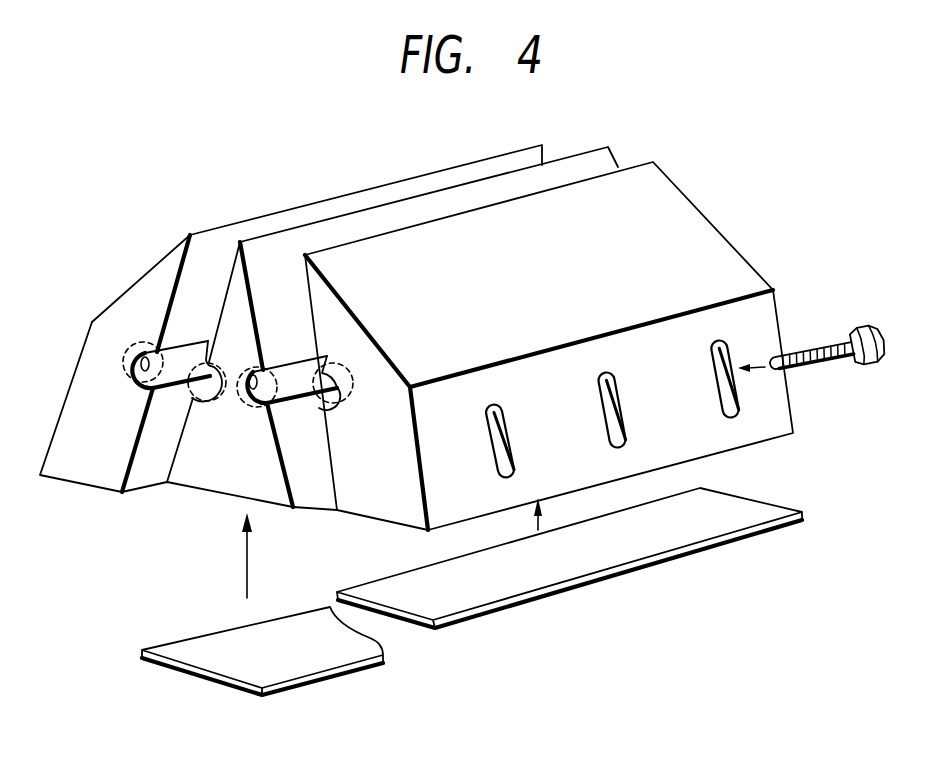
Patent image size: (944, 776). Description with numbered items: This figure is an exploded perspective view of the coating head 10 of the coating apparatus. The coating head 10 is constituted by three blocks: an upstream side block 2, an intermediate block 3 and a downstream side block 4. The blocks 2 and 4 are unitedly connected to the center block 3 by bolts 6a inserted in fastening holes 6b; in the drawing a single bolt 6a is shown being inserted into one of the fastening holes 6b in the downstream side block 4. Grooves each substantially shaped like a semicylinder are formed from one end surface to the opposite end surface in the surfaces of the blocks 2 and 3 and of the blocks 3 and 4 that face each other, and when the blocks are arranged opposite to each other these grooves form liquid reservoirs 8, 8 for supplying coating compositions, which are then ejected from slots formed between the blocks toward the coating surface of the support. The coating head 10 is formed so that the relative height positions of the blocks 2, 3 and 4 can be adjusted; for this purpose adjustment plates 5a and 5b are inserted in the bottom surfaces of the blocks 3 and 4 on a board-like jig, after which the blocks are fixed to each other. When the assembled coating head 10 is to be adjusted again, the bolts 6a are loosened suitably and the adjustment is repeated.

The coating head 10 is at (283, 122).
The upstream side block 2 is at (483, 157).
The intermediate block 3 is at (583, 153).
The downstream side block 4 is at (718, 229).
The adjustment plate 5a is at (350, 673).
The adjustment plate 5b is at (604, 579).
The bolt 6a is at (820, 347).
The fastening hole 6b is at (505, 458).
The liquid reservoir 8 is at (322, 373).